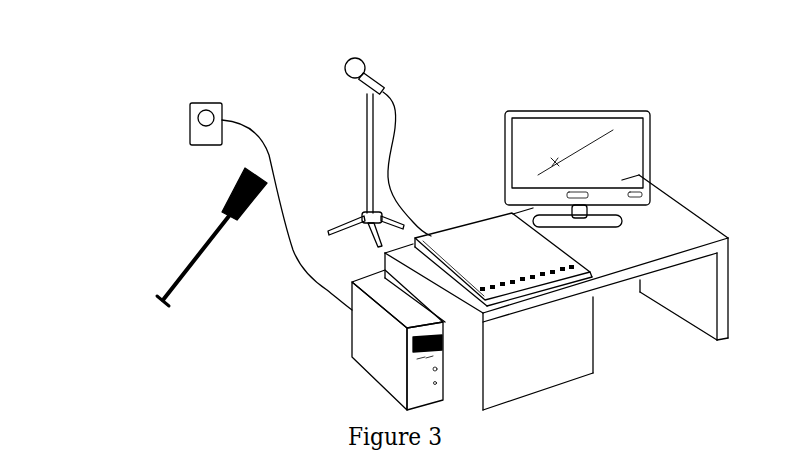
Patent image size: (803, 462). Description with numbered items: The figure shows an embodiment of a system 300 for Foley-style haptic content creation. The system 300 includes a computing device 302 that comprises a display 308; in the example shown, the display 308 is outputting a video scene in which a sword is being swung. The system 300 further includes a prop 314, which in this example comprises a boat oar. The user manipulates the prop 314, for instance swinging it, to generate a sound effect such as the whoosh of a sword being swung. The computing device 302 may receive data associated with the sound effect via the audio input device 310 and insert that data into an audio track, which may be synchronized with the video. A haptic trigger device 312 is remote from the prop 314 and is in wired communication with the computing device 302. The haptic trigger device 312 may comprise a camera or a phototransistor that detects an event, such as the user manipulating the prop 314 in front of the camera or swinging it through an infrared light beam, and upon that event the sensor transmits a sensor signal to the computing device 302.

The system 300 is at (86, 71).
The computing device 302 is at (354, 340).
The display 308 is at (628, 126).
The audio input device 310 is at (377, 56).
The haptic trigger device 312 is at (190, 98).
The prop 314 is at (192, 247).